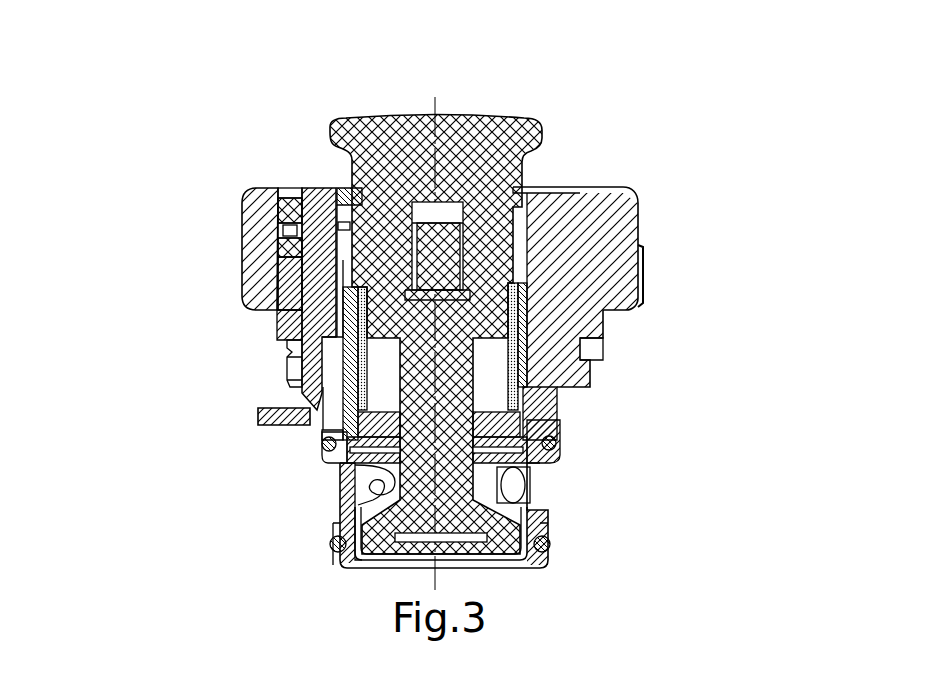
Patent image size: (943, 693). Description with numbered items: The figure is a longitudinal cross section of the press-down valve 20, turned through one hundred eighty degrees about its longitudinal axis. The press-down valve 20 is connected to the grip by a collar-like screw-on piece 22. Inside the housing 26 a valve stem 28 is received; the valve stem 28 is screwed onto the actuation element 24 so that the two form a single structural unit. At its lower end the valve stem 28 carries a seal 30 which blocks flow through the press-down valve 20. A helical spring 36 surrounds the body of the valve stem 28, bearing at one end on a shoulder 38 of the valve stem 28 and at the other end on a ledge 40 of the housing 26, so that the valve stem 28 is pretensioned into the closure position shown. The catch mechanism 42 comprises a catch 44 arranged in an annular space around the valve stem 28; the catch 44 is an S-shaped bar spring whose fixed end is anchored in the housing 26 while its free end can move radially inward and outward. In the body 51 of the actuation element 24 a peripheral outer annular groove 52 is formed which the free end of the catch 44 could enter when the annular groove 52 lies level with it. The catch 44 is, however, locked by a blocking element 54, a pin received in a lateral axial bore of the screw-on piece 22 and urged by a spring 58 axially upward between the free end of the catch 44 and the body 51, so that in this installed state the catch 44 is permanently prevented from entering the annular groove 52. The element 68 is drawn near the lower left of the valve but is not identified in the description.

The push-button actuator assembly 20 is at (608, 114).
The housing 22 is at (643, 181).
The push button cap 24 is at (487, 118).
The guide sleeve 26 is at (542, 399).
The sealing ring 28 is at (637, 298).
The base cup 30 is at (516, 567).
The flange 36 is at (590, 346).
The housing body 38 is at (612, 230).
The retaining nut 40 is at (542, 430).
The actuating direction 42 is at (188, 426).
The housing cover 44 is at (262, 233).
The pin 51 is at (376, 118).
The cap flange 52 is at (337, 190).
The guide rod 54 is at (282, 312).
The detent element 58 is at (278, 283).
The lever tab 68 is at (278, 418).